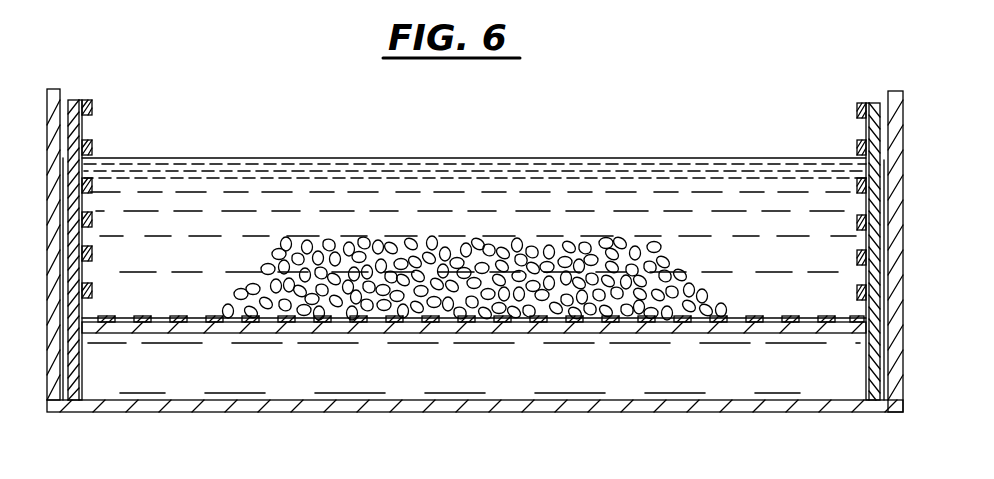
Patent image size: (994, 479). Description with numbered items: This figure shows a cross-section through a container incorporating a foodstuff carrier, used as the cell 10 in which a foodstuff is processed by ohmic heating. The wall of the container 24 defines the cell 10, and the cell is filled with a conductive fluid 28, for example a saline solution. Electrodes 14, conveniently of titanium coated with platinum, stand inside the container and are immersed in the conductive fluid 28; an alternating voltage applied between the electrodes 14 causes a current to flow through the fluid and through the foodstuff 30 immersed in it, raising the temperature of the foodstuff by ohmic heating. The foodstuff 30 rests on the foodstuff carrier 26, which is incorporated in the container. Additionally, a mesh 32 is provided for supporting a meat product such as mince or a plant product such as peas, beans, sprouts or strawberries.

The cell 10 is at (55, 84).
The electrodes 14 is at (88, 128).
The wall of the container 24 is at (890, 92).
The foodstuff carrier 26 is at (283, 330).
The conductive fluid 28 is at (690, 192).
The foodstuff 30 is at (447, 277).
The mesh 32 is at (90, 148).